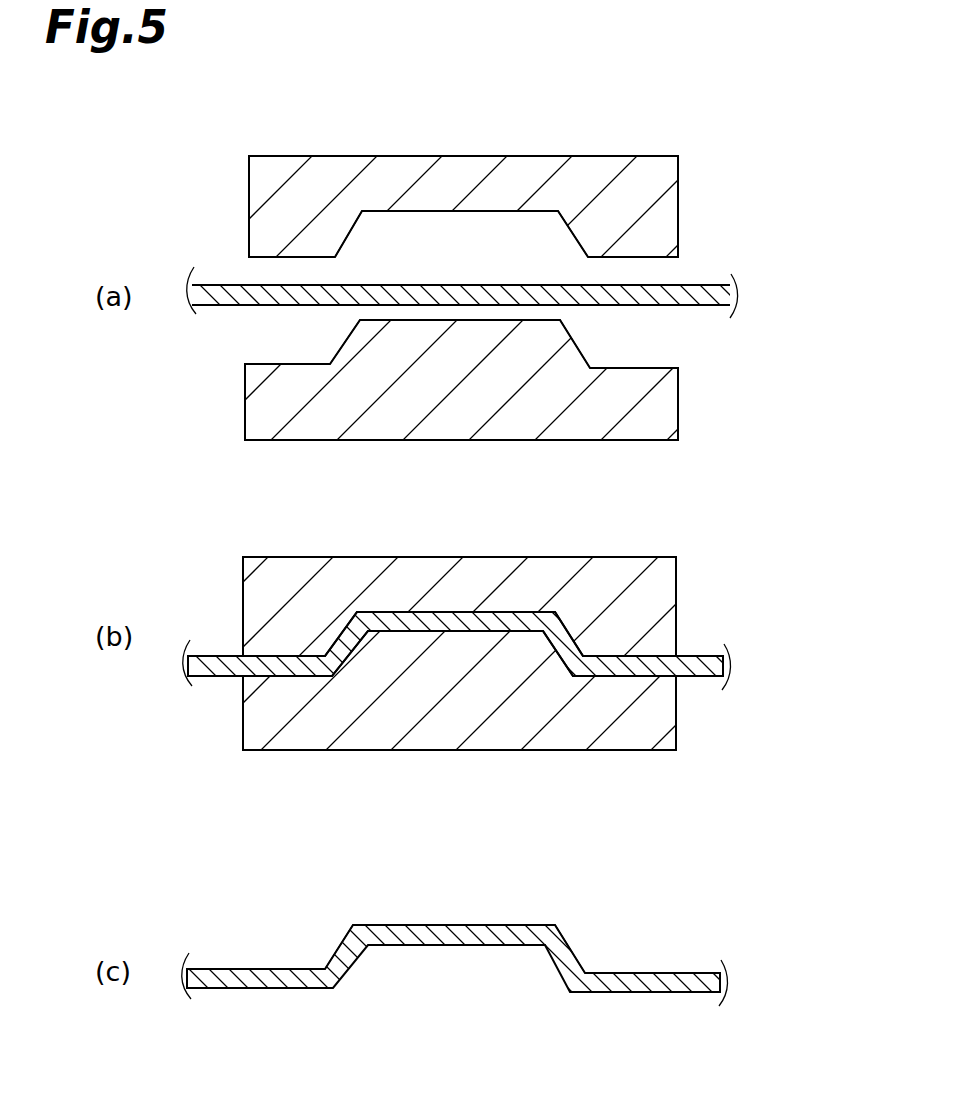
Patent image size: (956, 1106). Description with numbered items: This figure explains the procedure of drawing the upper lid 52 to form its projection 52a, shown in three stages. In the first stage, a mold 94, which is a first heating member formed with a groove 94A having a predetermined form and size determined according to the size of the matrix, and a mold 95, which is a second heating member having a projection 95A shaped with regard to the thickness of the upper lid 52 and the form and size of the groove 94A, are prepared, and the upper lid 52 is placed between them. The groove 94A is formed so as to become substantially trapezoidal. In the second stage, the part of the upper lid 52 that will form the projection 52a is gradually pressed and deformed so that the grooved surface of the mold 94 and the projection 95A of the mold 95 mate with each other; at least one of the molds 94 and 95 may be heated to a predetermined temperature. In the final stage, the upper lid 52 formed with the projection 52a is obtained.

The mold 94 is at (657, 211).
The groove 94A is at (437, 211).
The mold 95 is at (653, 407).
The projection 95A is at (538, 346).
The upper lid 52 is at (693, 293).
The projection 52a is at (565, 940).